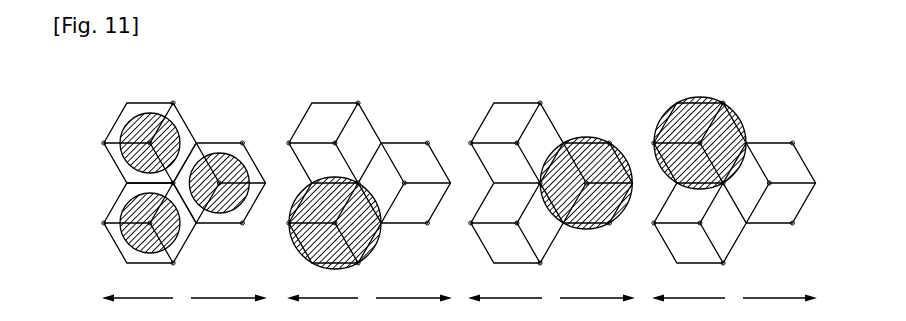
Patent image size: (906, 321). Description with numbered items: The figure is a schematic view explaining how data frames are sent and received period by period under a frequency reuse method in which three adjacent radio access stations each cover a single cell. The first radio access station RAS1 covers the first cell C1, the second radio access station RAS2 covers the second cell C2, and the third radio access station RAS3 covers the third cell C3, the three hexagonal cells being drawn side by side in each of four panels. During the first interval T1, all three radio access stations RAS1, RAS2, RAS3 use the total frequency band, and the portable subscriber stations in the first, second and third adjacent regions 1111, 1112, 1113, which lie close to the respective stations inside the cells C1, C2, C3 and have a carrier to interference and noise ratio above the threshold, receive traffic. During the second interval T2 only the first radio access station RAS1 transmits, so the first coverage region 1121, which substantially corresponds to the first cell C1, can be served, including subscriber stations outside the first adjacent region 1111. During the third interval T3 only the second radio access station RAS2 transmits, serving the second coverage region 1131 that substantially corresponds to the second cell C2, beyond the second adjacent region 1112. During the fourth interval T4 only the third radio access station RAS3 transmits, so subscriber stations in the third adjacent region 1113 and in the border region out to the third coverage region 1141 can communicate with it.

The first adjacent region 1111 is at (171, 244).
The second adjacent region 1112 is at (220, 153).
The third adjacent region 1113 is at (147, 112).
The first coverage region 1121 is at (375, 247).
The second coverage region 1131 is at (585, 137).
The third coverage region 1141 is at (693, 96).
The first radio access station RAS1 is at (150, 223).
The second radio access station RAS2 is at (219, 183).
The third radio access station RAS3 is at (150, 143).
The first cell C1 is at (114, 203).
The second cell C2 is at (215, 225).
The third cell C3 is at (187, 122).
The first interval T1 is at (184, 298).
The second interval T2 is at (369, 298).
The third interval T3 is at (551, 298).
The fourth interval T4 is at (734, 298).